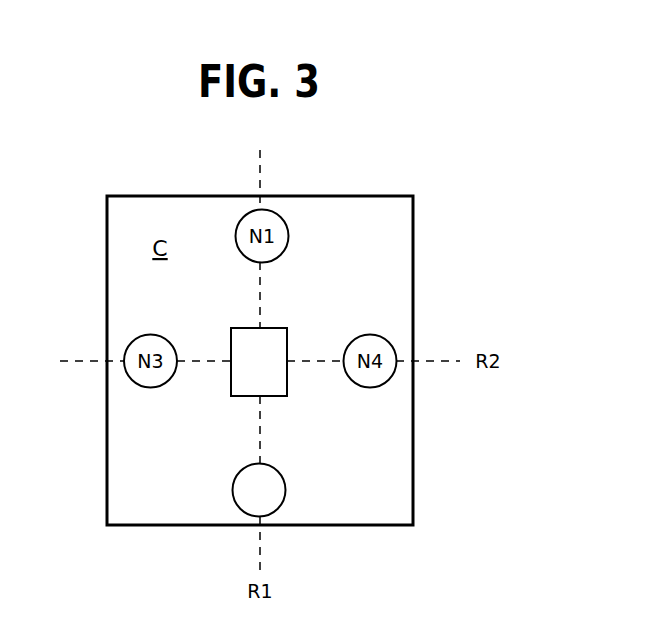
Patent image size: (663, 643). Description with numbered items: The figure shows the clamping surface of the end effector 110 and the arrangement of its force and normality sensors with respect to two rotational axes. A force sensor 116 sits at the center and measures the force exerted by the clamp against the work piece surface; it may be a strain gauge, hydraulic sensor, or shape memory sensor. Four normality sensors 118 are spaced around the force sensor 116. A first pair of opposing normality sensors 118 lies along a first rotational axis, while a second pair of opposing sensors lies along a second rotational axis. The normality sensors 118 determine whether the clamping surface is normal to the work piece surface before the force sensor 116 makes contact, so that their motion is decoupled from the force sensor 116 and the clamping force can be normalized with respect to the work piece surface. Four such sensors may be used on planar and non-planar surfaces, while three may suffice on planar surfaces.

The end effector 110 is at (305, 360).
The force sensor 116 is at (290, 345).
The normality sensors 118 is at (291, 480).